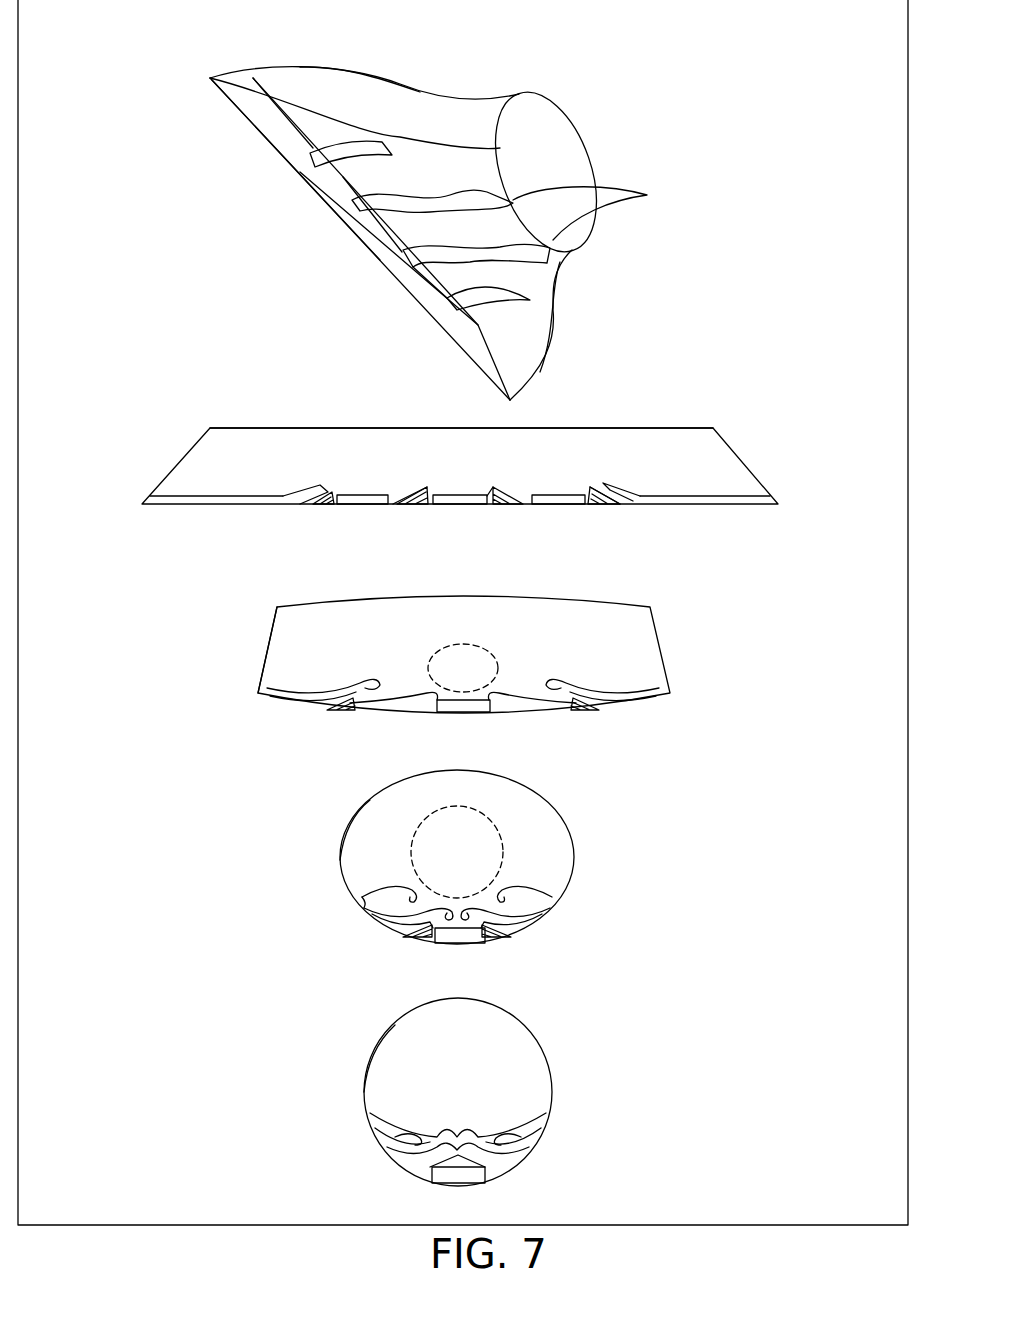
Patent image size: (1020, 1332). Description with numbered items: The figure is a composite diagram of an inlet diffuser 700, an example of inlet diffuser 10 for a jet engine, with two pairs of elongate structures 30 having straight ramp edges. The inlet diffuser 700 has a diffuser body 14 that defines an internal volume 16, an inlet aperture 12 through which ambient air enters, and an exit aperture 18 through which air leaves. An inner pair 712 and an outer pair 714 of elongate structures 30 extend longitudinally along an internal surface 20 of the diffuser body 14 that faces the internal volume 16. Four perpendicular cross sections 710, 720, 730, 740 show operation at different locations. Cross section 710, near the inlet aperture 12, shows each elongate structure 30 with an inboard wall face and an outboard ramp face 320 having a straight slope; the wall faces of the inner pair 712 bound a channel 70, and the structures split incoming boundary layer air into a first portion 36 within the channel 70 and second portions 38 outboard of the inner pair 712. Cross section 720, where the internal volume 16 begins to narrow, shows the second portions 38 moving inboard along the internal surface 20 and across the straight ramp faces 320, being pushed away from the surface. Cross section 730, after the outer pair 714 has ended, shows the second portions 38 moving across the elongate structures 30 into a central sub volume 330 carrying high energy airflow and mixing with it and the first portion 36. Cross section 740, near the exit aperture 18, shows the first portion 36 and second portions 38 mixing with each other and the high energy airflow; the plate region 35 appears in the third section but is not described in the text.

The inlet diffuser 700 is at (198, 22).
The inlet diffuser 10 is at (210, 52).
The inlet aperture 12 is at (265, 120).
The diffuser body 14 is at (468, 120).
The internal volume 16 is at (517, 343).
The exit aperture 18 is at (563, 153).
The internal surface 20 is at (430, 305).
The elongate structures 30 is at (347, 143).
The plate 35 is at (375, 893).
The first portion of boundary layer air 36 is at (445, 490).
The second portions of boundary layer air 38 is at (192, 496).
The channel 70 is at (485, 490).
The outboard ramp faces 320 is at (410, 497).
The central sub volume 330 is at (468, 662).
The cross section 710 is at (292, 423).
The inner pair of elongate structures 712 is at (625, 205).
The outer pair of elongate structures 714 is at (360, 150).
The cross section 720 is at (333, 502).
The cross section 730 is at (345, 822).
The cross section 740 is at (365, 1047).